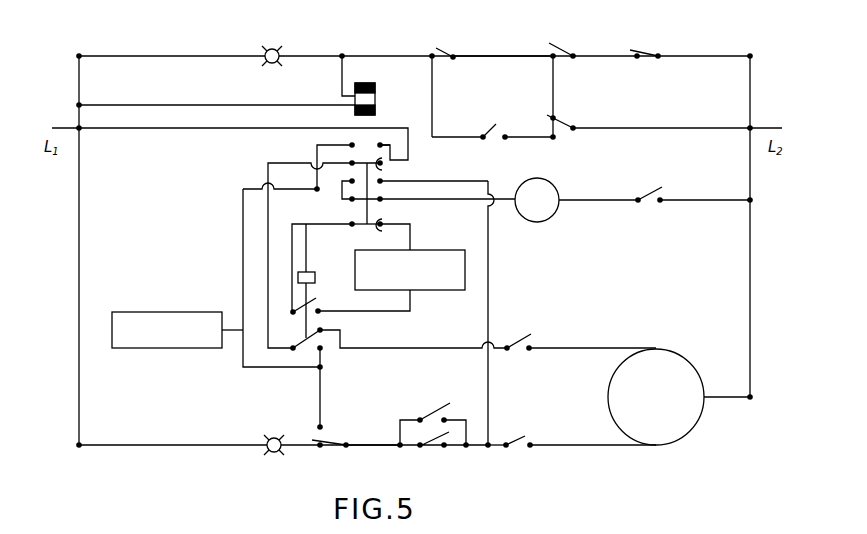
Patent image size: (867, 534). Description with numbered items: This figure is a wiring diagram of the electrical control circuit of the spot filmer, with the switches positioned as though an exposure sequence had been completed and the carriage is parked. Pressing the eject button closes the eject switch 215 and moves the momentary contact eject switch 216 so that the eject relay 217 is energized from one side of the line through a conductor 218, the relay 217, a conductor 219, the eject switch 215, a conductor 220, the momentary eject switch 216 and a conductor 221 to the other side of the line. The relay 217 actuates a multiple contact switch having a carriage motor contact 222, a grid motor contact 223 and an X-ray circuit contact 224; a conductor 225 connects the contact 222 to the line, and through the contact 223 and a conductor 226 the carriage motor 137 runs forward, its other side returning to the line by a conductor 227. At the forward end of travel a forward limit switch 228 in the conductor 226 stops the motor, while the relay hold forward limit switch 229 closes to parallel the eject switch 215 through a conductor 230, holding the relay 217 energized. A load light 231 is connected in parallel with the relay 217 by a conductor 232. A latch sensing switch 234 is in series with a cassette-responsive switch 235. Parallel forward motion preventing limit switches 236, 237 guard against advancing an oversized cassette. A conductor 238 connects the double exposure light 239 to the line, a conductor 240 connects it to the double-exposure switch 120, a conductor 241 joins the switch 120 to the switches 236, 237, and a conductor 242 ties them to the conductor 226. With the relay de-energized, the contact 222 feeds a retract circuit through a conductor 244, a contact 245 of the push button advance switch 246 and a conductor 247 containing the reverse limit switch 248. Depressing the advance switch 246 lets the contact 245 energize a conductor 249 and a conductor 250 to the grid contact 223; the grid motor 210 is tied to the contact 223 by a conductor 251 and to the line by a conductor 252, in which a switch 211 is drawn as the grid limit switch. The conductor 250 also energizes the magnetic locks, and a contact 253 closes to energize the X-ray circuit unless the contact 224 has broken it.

The double-exposure switch 120 is at (336, 447).
The carriage motor 137 is at (688, 361).
The grid motor 210 is at (549, 184).
The switch 211 is at (643, 195).
The eject switch 215 is at (490, 128).
The momentary contact eject switch 216 is at (575, 122).
The eject relay 217 is at (375, 105).
The conductor 218 is at (155, 105).
The conductor 219 is at (432, 76).
The conductor 220 is at (525, 137).
The conductor 221 is at (672, 128).
The carriage motor contact 222 is at (389, 170).
The grid motor contact 223 is at (383, 197).
The X-ray circuit contact 224 is at (389, 225).
The conductor 225 is at (140, 128).
The conductor 226 is at (492, 292).
The conductor 227 is at (750, 271).
The forward limit switch 228 is at (516, 441).
The relay hold forward limit switch 229 is at (436, 50).
The conductor 230 is at (532, 56).
The load light 231 is at (288, 50).
The conductor 232 is at (167, 56).
The latch sensing switch 234 is at (575, 51).
The cassette-responsive switch 235 is at (650, 52).
The forward motion preventing limit switch 236 is at (438, 409).
The forward motion preventing limit switch 237 is at (428, 451).
The conductor 238 is at (84, 400).
The double exposure light 239 is at (263, 442).
The conductor 240 is at (297, 440).
The conductor 241 is at (358, 444).
The conductor 242 is at (480, 447).
The conductor 244 is at (283, 163).
The contact 245 is at (305, 341).
The push button advance switch 246 is at (305, 271).
The conductor 247 is at (400, 348).
The reverse limit switch 248 is at (519, 339).
The conductor 249 is at (323, 365).
The conductor 250 is at (243, 243).
The conductor 251 is at (480, 205).
The conductor 252 is at (700, 200).
The contact 253 is at (322, 306).